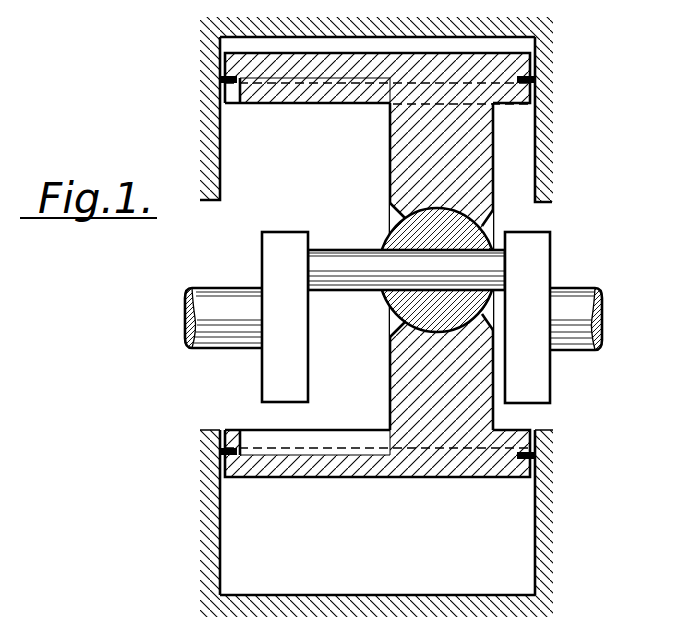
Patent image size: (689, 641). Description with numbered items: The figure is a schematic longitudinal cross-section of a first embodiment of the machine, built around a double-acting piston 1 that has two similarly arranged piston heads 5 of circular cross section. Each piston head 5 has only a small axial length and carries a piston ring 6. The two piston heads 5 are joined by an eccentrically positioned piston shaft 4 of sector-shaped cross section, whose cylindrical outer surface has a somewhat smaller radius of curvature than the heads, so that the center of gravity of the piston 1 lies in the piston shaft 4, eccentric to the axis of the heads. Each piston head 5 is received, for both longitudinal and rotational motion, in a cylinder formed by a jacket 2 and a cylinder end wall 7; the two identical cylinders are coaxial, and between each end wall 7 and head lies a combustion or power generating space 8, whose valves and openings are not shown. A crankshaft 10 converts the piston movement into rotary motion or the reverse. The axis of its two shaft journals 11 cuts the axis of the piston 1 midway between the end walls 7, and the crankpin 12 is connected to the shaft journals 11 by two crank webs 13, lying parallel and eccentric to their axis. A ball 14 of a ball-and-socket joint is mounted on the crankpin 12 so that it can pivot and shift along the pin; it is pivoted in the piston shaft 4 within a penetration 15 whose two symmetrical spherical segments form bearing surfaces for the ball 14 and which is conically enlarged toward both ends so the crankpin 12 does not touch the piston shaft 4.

The double-acting piston 1 is at (498, 148).
The jacket 2 is at (206, 128).
The piston shaft 4 is at (400, 161).
The piston head 5 is at (231, 76).
The piston ring 6 is at (536, 80).
The cylinder end wall 7 is at (306, 30).
The combustion or power generating space 8 is at (360, 45).
The crankshaft 10 is at (392, 307).
The shaft journal 11 is at (205, 305).
The crankpin 12 is at (357, 272).
The crank web 13 is at (290, 374).
The ball 14 is at (392, 240).
The penetration 15 is at (485, 227).